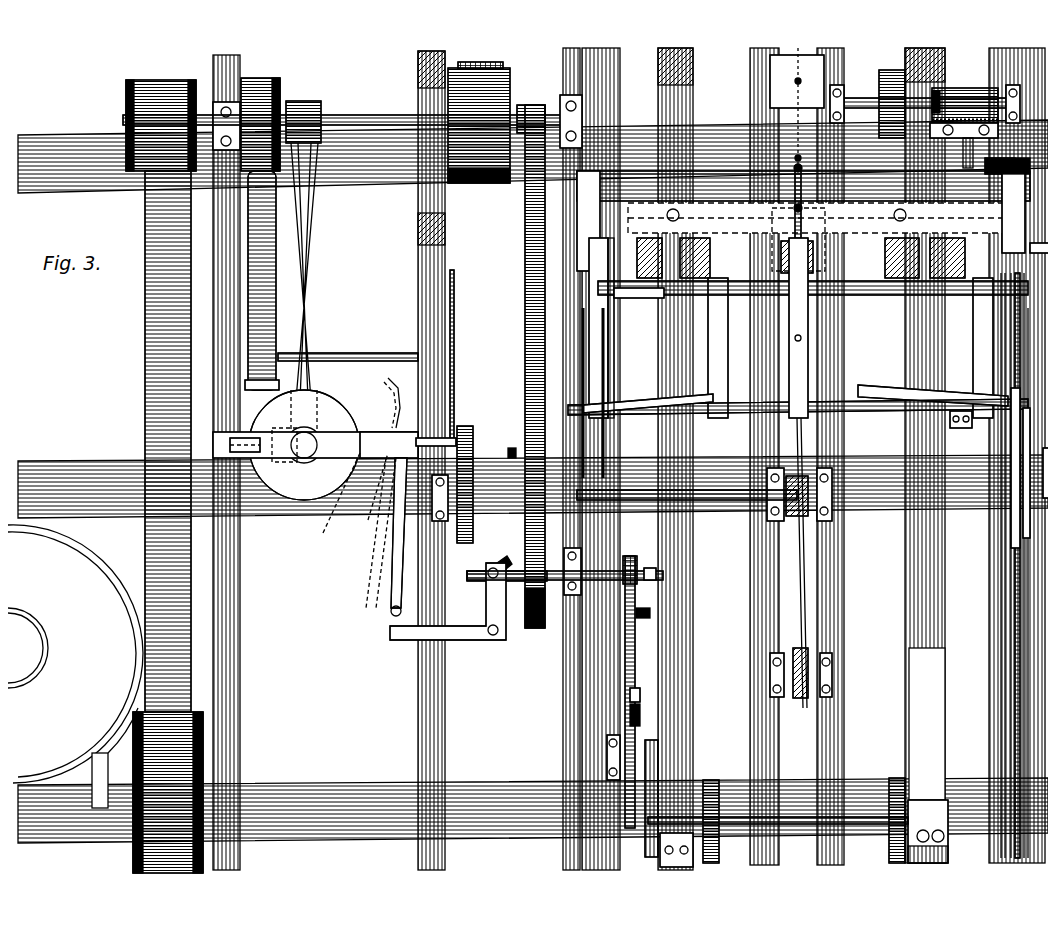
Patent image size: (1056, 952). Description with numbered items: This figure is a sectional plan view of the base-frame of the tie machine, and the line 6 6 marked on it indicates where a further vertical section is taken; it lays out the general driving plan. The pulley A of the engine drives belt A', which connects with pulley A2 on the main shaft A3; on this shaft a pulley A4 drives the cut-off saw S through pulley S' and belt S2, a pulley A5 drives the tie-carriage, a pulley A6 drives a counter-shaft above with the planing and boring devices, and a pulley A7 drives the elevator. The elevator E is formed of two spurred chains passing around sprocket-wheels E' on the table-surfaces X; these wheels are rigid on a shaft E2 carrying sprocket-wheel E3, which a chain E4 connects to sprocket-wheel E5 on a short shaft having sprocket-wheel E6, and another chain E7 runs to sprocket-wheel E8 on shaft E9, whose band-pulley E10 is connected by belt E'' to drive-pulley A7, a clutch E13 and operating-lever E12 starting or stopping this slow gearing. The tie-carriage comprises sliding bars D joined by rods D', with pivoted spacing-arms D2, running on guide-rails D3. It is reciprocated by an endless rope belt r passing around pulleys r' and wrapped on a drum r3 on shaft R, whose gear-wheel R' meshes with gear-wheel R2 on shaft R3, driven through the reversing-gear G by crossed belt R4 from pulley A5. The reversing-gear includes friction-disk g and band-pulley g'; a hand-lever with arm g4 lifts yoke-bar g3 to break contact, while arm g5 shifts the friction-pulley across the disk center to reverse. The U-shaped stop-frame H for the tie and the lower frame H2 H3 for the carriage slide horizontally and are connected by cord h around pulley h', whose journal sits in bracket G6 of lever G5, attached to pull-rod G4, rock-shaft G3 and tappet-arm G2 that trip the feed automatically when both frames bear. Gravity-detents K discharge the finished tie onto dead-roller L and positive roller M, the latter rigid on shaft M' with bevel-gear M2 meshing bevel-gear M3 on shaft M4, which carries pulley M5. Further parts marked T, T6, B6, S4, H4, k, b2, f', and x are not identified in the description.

The shaft T is at (62, 135).
The wheel T6 is at (75, 666).
The pulley A is at (199, 792).
The belt A' is at (168, 441).
The pulley A2 is at (130, 80).
The main shaft A3 is at (355, 110).
The pulley A4 is at (270, 70).
The pulley A5 is at (305, 93).
The pulley A6 is at (479, 125).
The drive-pulley A7 is at (530, 97).
The cap B6 is at (480, 53).
The cut-off saw S is at (462, 355).
The pulley S' is at (233, 354).
The belt S2 is at (262, 280).
The rod S4 is at (348, 343).
The crossed belt R4 is at (312, 262).
The shaft R3 is at (423, 428).
The gear-wheel R2 is at (466, 484).
The gear-wheel R' is at (500, 563).
The shaft R is at (687, 465).
The reversing-gear G is at (304, 445).
The tappet-arm G2 is at (385, 470).
The rock-shaft G3 is at (505, 447).
The pull-rod G4 is at (640, 290).
The horizontal lever G5 is at (766, 240).
The bracket G6 is at (770, 240).
The friction-disk g is at (315, 433).
The band-pulley g' is at (301, 460).
The yoke-bar g3 is at (352, 425).
The arm g4 is at (354, 496).
The arm g5 is at (378, 378).
The elevator E is at (565, 575).
The sprocket-wheels E' is at (781, 804).
The shaft E2 is at (800, 805).
The sprocket-wheel E3 is at (635, 835).
The chain E4 is at (650, 750).
The sprocket-wheel E5 is at (632, 705).
The sprocket-wheel E6 is at (632, 690).
The chain E7 is at (642, 628).
The sprocket-wheel E8 is at (636, 675).
The shaft E9 is at (648, 572).
The band-pulley E10 is at (525, 620).
The operating-lever E12 is at (418, 625).
The clutch E13 is at (498, 552).
The belt E'' is at (534, 461).
The U-shaped frame H is at (823, 217).
The U-shaped frame H2 is at (803, 186).
The U-shaped frame H3 is at (572, 200).
The bracket H4 is at (995, 250).
The cord h is at (809, 221).
The pulley-wheel h' is at (830, 264).
The roller M is at (961, 385).
The horizontal shaft M' is at (1007, 176).
The bevel-gear M2 is at (935, 100).
The bevel-gear M3 is at (930, 90).
The shaft M4 is at (845, 92).
The pulley M5 is at (878, 132).
The sliding bars D is at (796, 328).
The rods D' is at (813, 357).
The spacing-arms D2 is at (715, 392).
The guide-rails D3 is at (590, 405).
The dead-roller L is at (622, 328).
The rod k is at (548, 405).
The gravity-detents K is at (1030, 470).
The rope belt r is at (830, 473).
The pulley r' is at (801, 684).
The drum r3 is at (760, 495).
The box b2 is at (797, 109).
The pin f' is at (763, 129).
The section line 6 is at (790, 840).
The point x is at (705, 667).
The table-surfaces X is at (927, 724).